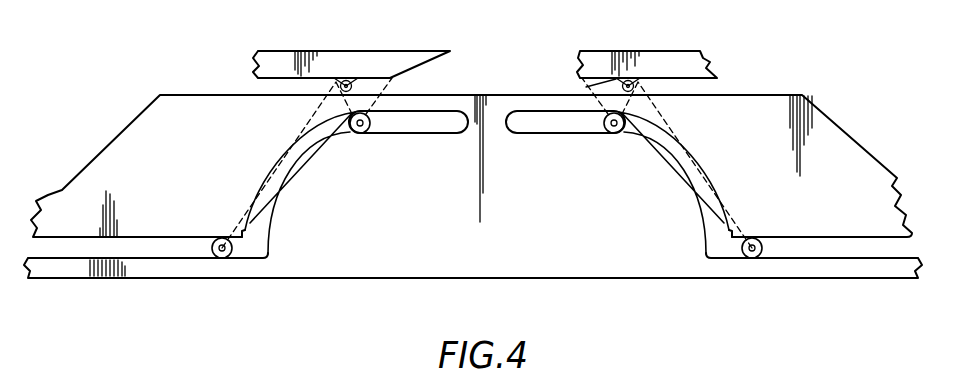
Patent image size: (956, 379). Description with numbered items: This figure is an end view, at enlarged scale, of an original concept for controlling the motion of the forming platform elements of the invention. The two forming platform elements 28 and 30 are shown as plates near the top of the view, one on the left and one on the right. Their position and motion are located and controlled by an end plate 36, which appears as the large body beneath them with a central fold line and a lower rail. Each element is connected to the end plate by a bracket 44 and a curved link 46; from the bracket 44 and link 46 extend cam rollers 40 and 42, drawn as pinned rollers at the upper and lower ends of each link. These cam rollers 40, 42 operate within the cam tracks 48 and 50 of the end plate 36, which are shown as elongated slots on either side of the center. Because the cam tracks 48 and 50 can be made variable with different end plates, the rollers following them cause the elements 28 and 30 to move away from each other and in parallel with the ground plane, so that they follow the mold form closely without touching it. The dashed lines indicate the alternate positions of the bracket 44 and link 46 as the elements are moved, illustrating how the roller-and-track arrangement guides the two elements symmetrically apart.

The forming platform element 28 is at (364, 58).
The forming platform element 30 is at (655, 58).
The end plate 36 is at (481, 94).
The cam roller 40 is at (364, 133).
The cam roller 42 is at (224, 258).
The bracket 44 is at (390, 87).
The link 46 is at (288, 158).
The cam track 48 is at (433, 132).
The cam track 50 is at (538, 132).